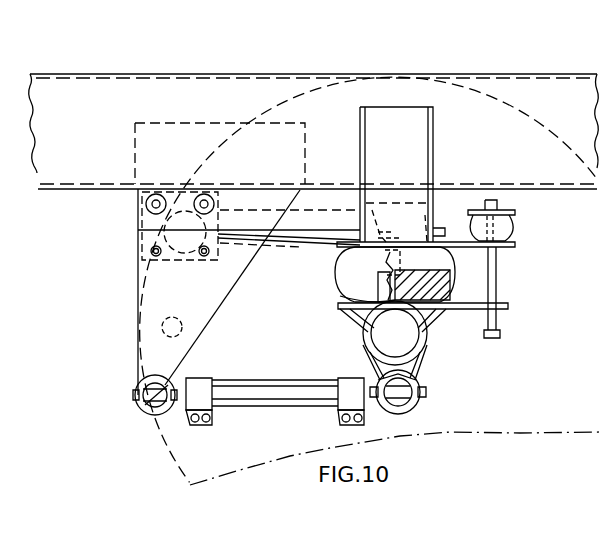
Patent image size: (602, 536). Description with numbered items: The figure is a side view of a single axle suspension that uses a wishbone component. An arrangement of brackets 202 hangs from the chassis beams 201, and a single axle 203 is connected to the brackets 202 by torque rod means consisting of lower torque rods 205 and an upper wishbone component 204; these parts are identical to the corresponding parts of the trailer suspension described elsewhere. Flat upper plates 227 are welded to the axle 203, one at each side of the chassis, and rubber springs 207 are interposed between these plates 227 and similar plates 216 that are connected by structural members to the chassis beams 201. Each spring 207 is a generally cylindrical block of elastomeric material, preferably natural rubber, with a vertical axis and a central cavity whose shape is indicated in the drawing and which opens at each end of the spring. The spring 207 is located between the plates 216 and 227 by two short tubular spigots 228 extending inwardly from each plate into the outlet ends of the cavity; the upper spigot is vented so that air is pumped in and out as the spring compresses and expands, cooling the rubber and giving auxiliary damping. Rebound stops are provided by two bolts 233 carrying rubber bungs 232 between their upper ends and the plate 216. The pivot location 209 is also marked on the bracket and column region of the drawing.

The chassis beam 201 is at (568, 182).
The bracket 202 is at (228, 286).
The single axle 203 is at (424, 345).
The upper wishbone component 204 is at (309, 242).
The lower torque rod 205 is at (249, 410).
The rubber spring 207 is at (338, 274).
The pivot / column 209 is at (162, 328).
The plate 216 is at (505, 246).
The flat upper plate 227 is at (342, 312).
The tubular spigot 228 is at (338, 305).
The rubber bung 232 is at (505, 218).
The bolt 233 is at (497, 287).